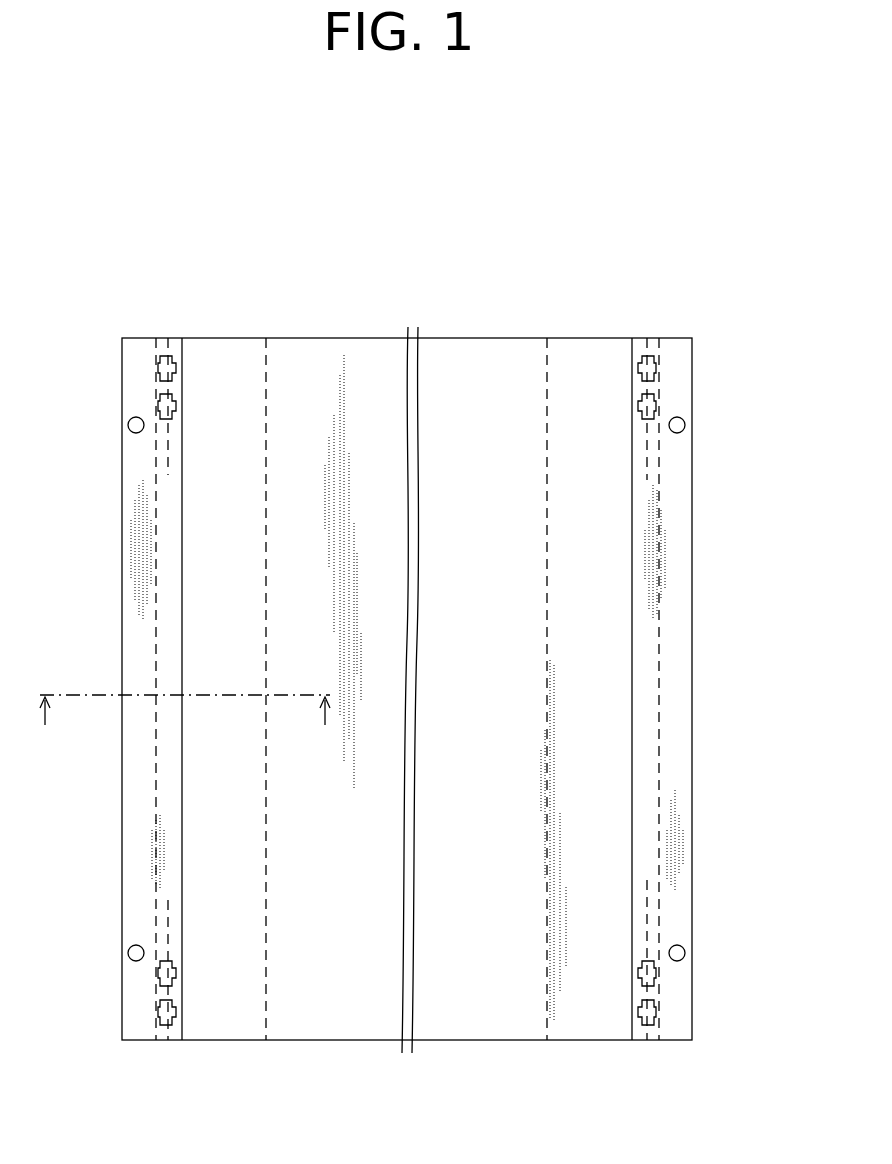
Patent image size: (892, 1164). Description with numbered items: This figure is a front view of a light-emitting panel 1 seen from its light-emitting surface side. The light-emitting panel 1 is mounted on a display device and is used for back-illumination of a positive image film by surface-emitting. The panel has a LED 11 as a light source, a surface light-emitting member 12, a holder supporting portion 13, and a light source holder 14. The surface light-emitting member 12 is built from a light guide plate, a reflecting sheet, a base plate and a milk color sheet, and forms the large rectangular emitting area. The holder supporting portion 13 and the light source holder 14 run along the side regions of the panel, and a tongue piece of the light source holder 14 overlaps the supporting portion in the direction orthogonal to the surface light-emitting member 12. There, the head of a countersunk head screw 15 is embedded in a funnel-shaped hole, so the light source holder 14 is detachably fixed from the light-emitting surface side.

The light-emitting panel 1 is at (209, 262).
The LED 11 is at (158, 405).
The surface light-emitting member 12 is at (445, 375).
The holder supporting portion 13 is at (266, 388).
The light source holder 14 is at (182, 937).
The countersunk head screw 15 is at (131, 432).